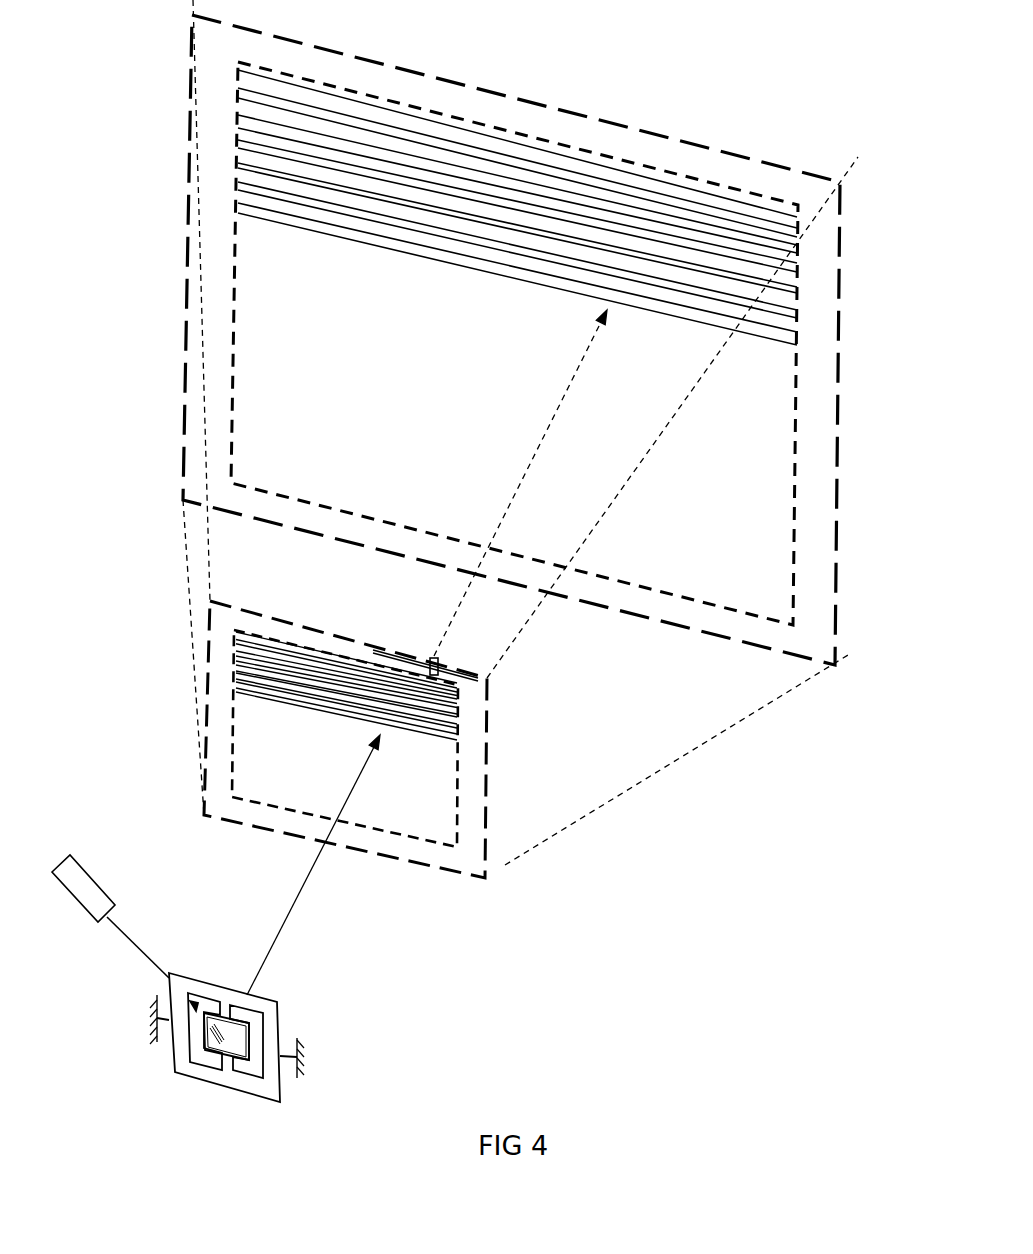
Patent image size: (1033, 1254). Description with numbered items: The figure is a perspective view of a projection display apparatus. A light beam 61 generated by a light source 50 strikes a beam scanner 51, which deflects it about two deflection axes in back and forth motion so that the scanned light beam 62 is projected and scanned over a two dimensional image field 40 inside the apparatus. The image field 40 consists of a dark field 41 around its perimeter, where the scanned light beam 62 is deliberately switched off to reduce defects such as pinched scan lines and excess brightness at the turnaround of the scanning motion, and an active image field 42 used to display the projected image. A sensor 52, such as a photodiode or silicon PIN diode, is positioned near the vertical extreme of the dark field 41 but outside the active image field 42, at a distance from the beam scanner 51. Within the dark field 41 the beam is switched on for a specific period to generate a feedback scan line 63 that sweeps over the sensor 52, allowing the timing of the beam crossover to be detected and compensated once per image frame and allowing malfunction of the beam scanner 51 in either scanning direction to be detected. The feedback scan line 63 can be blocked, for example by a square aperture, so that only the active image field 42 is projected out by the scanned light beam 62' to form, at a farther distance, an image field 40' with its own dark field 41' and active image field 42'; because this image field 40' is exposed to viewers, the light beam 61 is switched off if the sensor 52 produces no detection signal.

The image field 40' is at (545, 340).
The dark field 41' is at (545, 340).
The active image field 42' is at (569, 343).
The scanned light beam 62' is at (519, 483).
The image field 40 is at (370, 739).
The dark field 41 is at (370, 739).
The active image field 42 is at (384, 738).
The light source 50 is at (80, 893).
The beam scanner 51 is at (238, 1083).
The sensor 52 is at (433, 657).
The light beam 61 is at (130, 947).
The scanned light beam 62 is at (296, 865).
The feedback scan line 63 is at (465, 668).